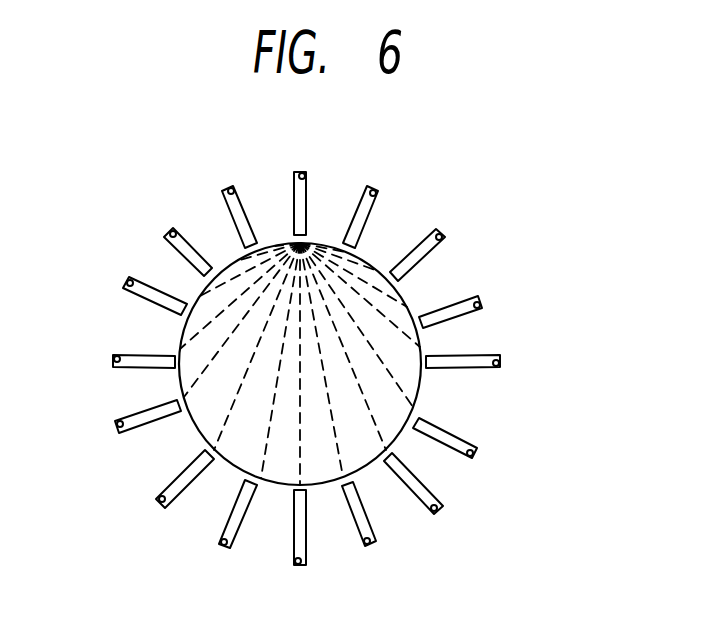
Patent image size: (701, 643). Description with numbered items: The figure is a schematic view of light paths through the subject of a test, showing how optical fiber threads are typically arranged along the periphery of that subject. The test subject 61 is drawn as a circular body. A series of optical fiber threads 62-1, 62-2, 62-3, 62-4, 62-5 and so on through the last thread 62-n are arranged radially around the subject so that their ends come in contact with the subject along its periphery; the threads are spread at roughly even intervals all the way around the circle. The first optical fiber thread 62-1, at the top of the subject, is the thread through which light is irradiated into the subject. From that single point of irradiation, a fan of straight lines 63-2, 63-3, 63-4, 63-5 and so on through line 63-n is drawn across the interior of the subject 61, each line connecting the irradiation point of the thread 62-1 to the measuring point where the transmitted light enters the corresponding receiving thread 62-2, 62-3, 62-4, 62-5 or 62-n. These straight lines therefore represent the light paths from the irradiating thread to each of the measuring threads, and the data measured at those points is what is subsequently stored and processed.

The test subject 61 is at (322, 488).
The optical fiber thread 62-1 is at (305, 172).
The optical fiber thread 62-2 is at (380, 206).
The optical fiber thread 62-3 is at (442, 237).
The optical fiber thread 62-4 is at (481, 304).
The optical fiber thread 62-5 is at (500, 366).
The optical fiber thread 62-n is at (231, 188).
The straight line 63-2 is at (326, 243).
The straight line 63-3 is at (383, 264).
The straight line 63-4 is at (390, 294).
The straight line 63-5 is at (421, 337).
The straight line 63-n is at (282, 245).